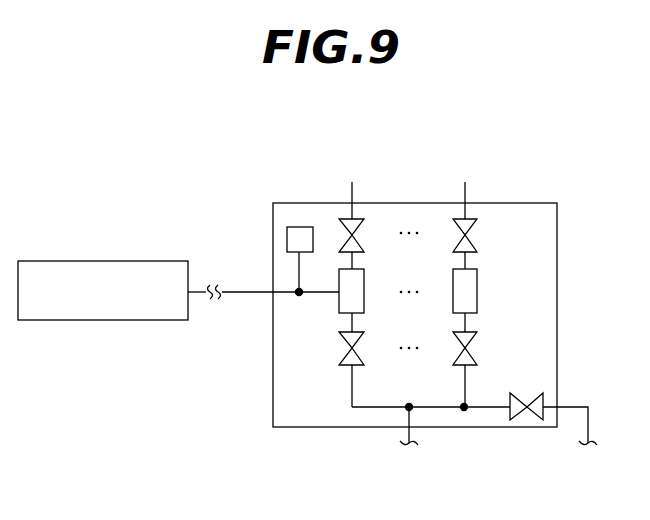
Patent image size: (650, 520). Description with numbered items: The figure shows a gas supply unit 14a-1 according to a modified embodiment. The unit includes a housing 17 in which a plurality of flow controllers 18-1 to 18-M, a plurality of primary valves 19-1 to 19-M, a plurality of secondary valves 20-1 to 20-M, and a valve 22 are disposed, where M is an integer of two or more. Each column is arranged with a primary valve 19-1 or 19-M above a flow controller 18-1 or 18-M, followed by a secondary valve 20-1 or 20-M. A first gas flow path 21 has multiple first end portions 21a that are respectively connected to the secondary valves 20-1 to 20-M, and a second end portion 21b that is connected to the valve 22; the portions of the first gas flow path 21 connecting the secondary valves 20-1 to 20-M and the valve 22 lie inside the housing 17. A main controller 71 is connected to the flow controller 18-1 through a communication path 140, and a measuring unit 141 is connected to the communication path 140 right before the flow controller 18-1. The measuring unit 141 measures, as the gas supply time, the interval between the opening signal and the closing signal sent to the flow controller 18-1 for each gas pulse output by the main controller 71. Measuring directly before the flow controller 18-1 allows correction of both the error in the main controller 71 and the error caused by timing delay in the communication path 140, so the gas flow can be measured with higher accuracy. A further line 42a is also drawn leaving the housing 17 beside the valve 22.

The gas supply unit 14a-1 is at (535, 165).
The housing 17 is at (395, 203).
The main controller 71 is at (141, 261).
The communication path 140 is at (236, 290).
The measuring unit 141 is at (300, 227).
The primary valve 19-1 is at (340, 234).
The flow controller 18-1 is at (339, 306).
The secondary valve 20-1 is at (339, 348).
The primary valve 19-M is at (477, 235).
The flow controller 18-M is at (477, 292).
The secondary valve 20-M is at (477, 347).
The first end portions 21a is at (352, 378).
The first gas flow path 21 is at (370, 409).
The second end portion 21b is at (507, 410).
The valve 22 is at (531, 420).
The exhaust pipe 42a is at (558, 410).